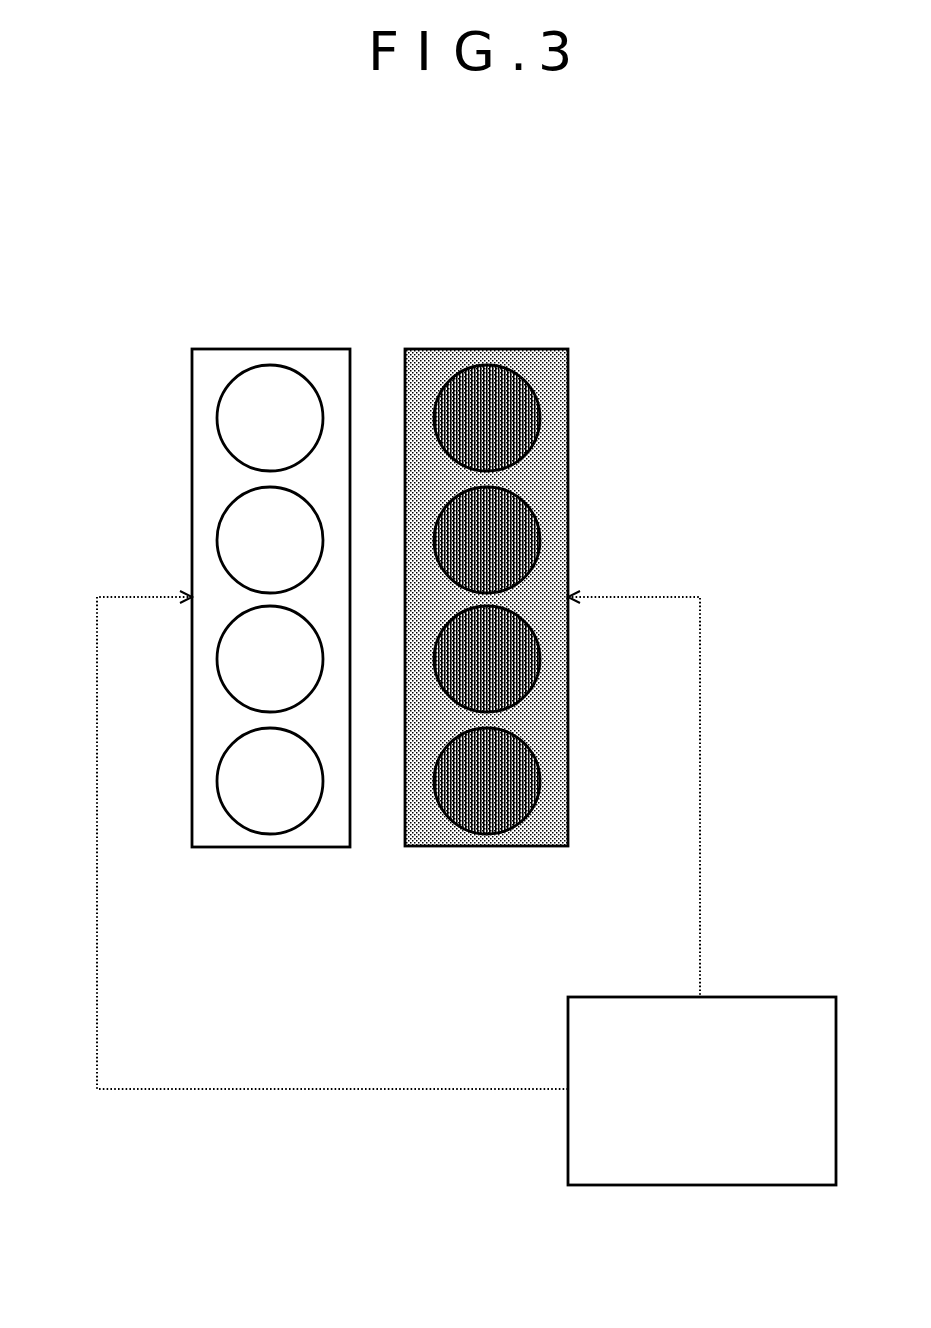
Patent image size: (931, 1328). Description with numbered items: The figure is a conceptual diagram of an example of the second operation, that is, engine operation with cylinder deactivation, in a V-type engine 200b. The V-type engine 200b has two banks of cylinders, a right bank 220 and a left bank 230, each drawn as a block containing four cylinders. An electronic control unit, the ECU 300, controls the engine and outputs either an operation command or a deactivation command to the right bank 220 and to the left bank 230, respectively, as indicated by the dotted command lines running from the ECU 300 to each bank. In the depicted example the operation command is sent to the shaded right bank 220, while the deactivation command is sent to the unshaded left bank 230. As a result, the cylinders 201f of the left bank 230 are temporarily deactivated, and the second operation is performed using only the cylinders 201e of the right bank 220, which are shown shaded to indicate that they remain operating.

The V-type engine 200b is at (447, 226).
The left bank 230 is at (218, 349).
The right bank 220 is at (542, 349).
The cylinders of the left bank 201f is at (262, 780).
The cylinders of the right bank 201e is at (487, 780).
The electronic control unit (ECU) 300 is at (755, 997).